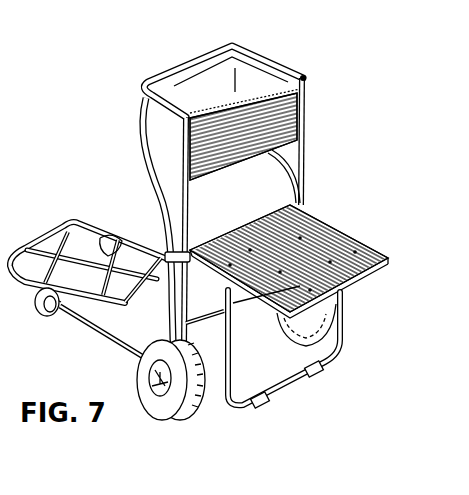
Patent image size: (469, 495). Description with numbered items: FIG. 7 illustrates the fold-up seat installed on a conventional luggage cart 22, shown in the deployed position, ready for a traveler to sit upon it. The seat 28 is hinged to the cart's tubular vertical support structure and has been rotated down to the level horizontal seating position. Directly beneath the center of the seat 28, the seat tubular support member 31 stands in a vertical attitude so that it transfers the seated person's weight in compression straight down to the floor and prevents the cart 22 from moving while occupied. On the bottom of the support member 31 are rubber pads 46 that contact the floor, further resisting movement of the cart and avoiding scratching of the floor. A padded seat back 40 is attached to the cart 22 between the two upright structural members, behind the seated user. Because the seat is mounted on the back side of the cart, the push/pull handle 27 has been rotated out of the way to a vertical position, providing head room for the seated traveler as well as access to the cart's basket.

The luggage cart 22 is at (145, 175).
The push/pull handle 27 is at (163, 72).
The seat 28 is at (325, 228).
The seat tubular support member 31 is at (343, 337).
The padded seat back 40 is at (306, 100).
The rubber pads 46 is at (318, 373).